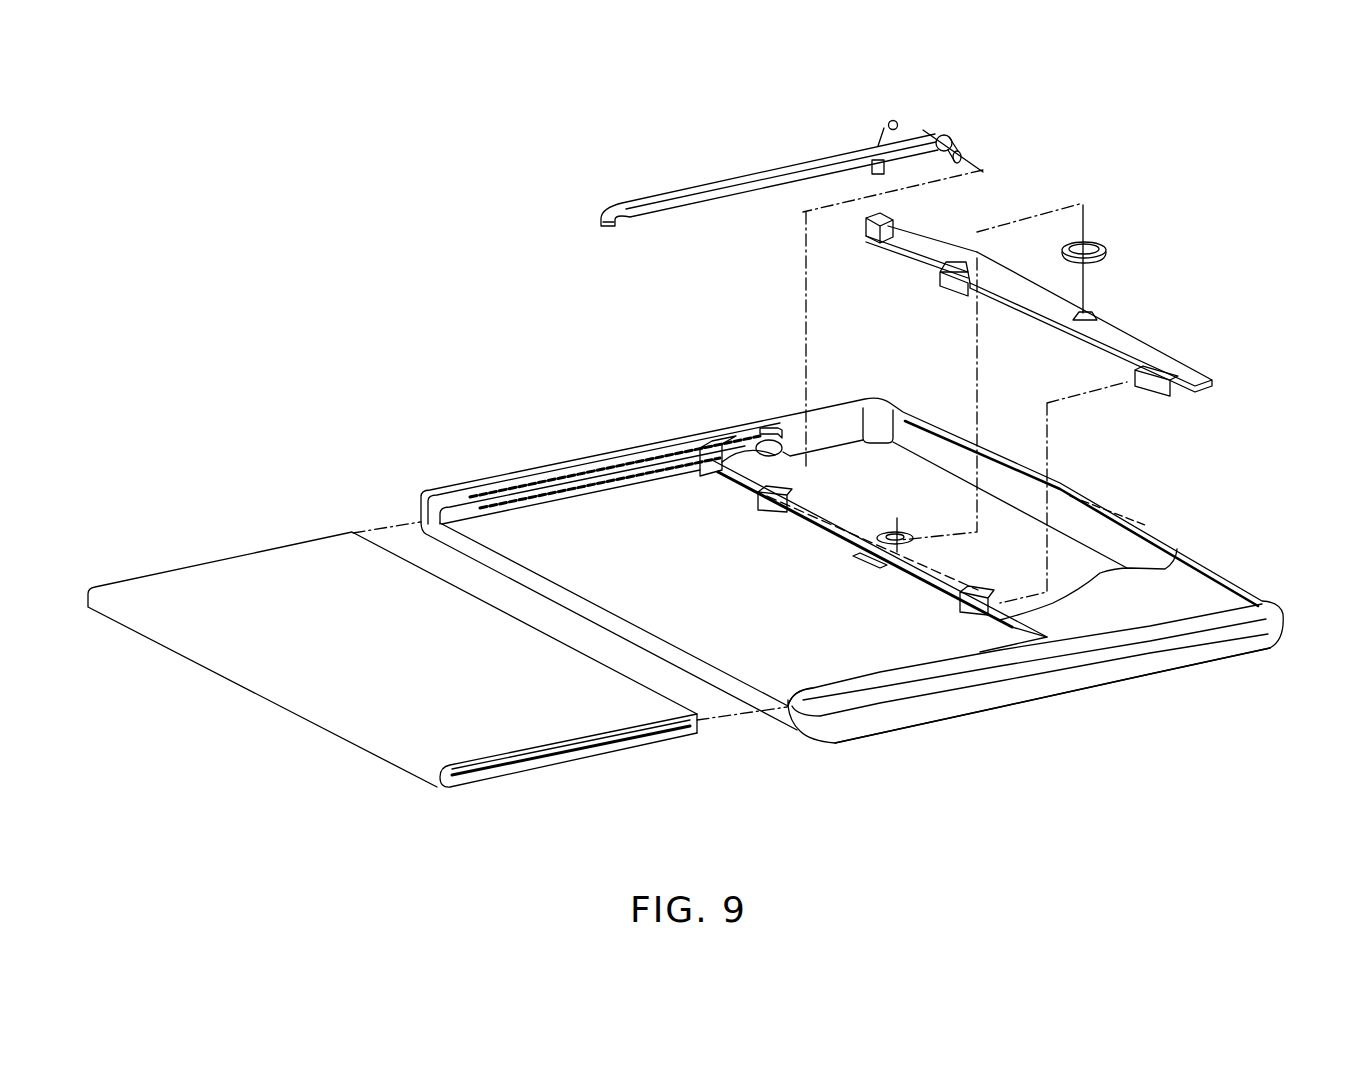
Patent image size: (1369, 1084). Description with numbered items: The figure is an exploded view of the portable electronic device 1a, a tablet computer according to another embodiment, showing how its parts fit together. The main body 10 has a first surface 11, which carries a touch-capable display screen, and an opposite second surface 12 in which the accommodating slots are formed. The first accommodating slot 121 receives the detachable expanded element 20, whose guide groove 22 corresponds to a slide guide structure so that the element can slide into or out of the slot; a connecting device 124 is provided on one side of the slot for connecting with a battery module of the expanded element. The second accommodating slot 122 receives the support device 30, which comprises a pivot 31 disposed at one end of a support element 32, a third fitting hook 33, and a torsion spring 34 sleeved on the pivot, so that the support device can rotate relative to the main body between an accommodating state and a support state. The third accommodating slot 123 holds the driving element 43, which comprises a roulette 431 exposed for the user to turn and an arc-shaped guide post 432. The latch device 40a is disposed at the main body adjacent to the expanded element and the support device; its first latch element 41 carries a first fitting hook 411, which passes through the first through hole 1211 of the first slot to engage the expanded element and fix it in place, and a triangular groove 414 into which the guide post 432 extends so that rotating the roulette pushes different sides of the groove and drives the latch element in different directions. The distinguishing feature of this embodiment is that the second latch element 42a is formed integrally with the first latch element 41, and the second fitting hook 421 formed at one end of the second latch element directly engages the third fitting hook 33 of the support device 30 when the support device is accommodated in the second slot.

The portable electronic device 1a is at (416, 348).
The main body 10 is at (1267, 637).
The first surface 11 is at (1087, 690).
The second surface 12 is at (1202, 597).
The first accommodating slot 121 is at (788, 683).
The second accommodating slot 122 is at (667, 457).
The first through hole 1211 is at (760, 507).
The third accommodating slot 123 is at (877, 538).
The connecting device 124 is at (873, 567).
The expanded element 20 is at (392, 675).
The guide groove 22 is at (567, 757).
The support device 30 is at (781, 154).
The pivot 31 is at (940, 141).
The support element 32 is at (782, 170).
The third fitting hook 33 is at (870, 168).
The torsion spring 34 is at (883, 118).
The latch device 40a is at (1042, 306).
The first latch element 41 is at (1150, 353).
The first fitting hook 411 is at (937, 278).
The groove 414 is at (1097, 315).
The second latch element 42a is at (912, 236).
The second fitting hook 421 is at (882, 216).
The driving element 43 is at (1124, 234).
The roulette 431 is at (1105, 252).
The guide post 432 is at (1107, 242).